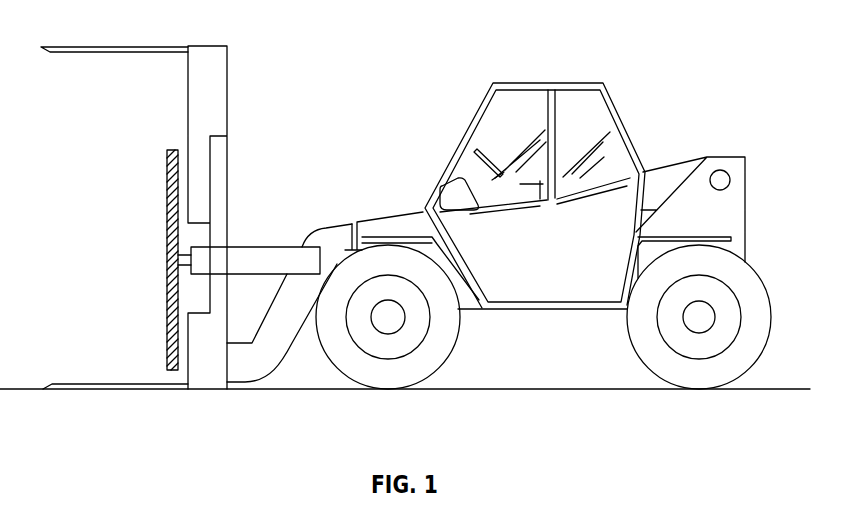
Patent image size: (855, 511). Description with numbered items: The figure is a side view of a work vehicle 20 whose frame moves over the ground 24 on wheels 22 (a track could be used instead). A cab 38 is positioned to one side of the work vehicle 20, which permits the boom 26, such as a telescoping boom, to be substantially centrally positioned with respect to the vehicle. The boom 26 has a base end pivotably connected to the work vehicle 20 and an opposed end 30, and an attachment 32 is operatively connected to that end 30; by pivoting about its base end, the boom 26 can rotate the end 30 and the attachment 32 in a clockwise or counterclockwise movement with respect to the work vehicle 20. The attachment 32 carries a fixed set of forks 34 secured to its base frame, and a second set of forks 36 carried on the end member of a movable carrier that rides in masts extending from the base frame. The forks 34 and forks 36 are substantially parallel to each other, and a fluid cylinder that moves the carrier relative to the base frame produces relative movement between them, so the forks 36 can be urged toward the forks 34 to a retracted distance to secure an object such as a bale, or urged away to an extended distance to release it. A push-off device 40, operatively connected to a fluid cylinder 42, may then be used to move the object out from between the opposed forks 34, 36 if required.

The work vehicle 20 is at (653, 110).
The wheels 22 is at (628, 350).
The ground 24 is at (778, 390).
The boom 26 is at (597, 180).
The opposed end 30 is at (300, 337).
The attachment 32 is at (262, 48).
The fixed set of forks 34 is at (70, 384).
The forks 36 is at (70, 45).
The cab 38 is at (520, 82).
The push-off device 40 is at (165, 173).
The fluid cylinder 42 is at (267, 247).